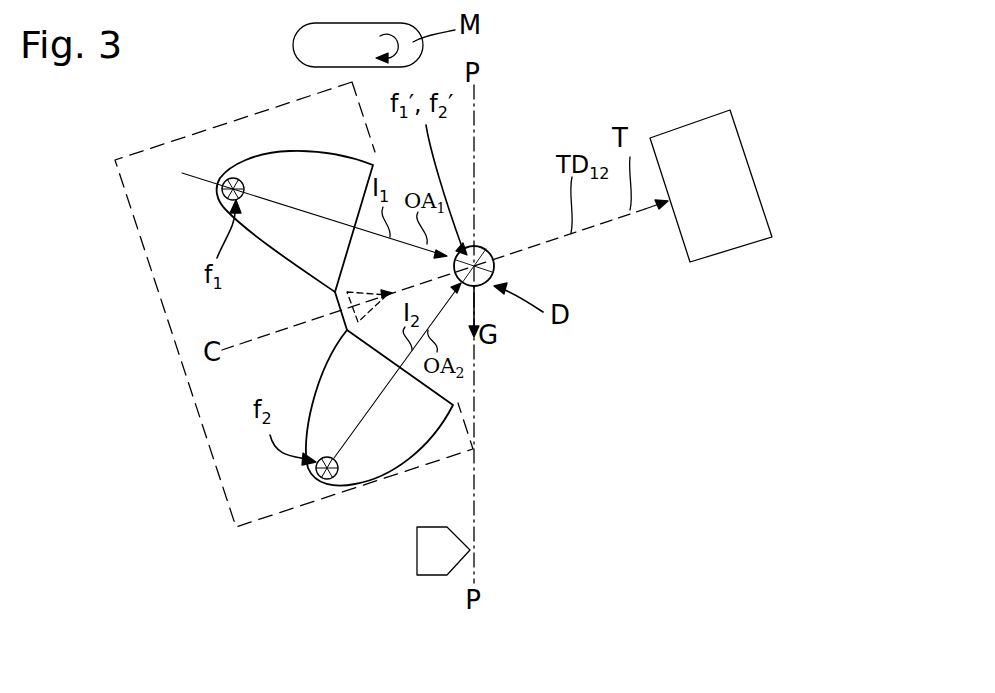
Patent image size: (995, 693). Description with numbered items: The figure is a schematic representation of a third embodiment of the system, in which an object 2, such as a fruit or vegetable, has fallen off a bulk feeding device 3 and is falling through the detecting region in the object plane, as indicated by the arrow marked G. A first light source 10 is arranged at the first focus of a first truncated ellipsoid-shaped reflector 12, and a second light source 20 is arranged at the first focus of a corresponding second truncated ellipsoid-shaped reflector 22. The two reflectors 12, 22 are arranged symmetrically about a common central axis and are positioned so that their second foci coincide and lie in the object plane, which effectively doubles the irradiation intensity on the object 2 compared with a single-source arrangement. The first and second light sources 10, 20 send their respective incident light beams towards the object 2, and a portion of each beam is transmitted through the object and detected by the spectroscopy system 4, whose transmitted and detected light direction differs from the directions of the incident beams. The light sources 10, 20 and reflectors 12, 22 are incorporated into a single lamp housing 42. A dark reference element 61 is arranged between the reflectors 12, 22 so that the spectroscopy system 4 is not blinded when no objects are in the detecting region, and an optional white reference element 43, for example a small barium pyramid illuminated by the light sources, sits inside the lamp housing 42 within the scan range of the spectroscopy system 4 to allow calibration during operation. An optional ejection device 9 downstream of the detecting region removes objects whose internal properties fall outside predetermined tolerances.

The object 2 is at (490, 249).
The bulk feeding device 3 is at (310, 25).
The spectroscopy system 4 is at (693, 143).
The ejection device 9 is at (433, 543).
The first light source 10 is at (240, 173).
The first reflector 12 is at (283, 155).
The second light source 20 is at (342, 478).
The second reflector 22 is at (310, 397).
The lamp housing 42 is at (127, 197).
The white reference element 43 is at (350, 288).
The dark reference element 61 is at (333, 298).